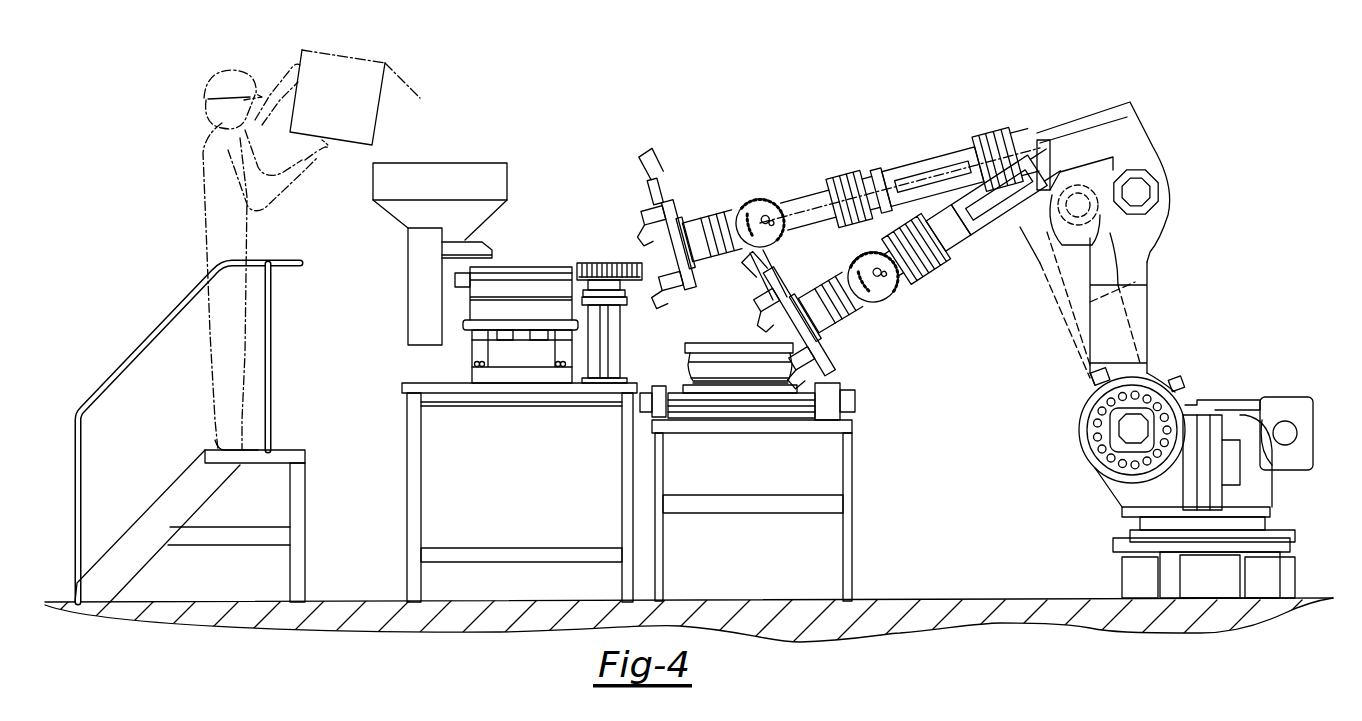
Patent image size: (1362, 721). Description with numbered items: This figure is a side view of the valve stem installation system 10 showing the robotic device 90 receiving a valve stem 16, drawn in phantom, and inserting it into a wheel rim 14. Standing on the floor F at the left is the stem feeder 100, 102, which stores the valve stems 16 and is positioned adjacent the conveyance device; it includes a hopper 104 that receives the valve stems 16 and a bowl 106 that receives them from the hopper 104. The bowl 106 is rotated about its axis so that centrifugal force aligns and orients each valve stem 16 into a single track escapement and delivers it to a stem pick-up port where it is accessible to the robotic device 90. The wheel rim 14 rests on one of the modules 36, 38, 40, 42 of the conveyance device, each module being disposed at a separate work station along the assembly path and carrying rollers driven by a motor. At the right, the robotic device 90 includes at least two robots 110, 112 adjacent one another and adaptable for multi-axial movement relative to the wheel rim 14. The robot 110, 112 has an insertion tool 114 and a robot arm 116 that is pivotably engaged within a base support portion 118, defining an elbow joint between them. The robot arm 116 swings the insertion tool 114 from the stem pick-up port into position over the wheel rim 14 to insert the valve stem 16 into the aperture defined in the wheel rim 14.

The valve stem installation system 10 is at (703, 108).
The wheel rim 14 is at (698, 366).
The valve stem 16 is at (606, 262).
The module 36 is at (822, 492).
The module 38 is at (822, 492).
The module 40 is at (822, 492).
The module 42 is at (855, 514).
The robotic device 90 is at (1256, 191).
The stem feeder 100 is at (479, 355).
The stem feeder 102 is at (479, 355).
The hopper 104 is at (478, 223).
The bowl 106 is at (480, 163).
The robot 110 is at (989, 170).
The robot 112 is at (1140, 140).
The insertion tool 114 is at (740, 200).
The robot arm 116 is at (967, 228).
The base support portion 118 is at (1140, 310).
The floor F is at (883, 625).